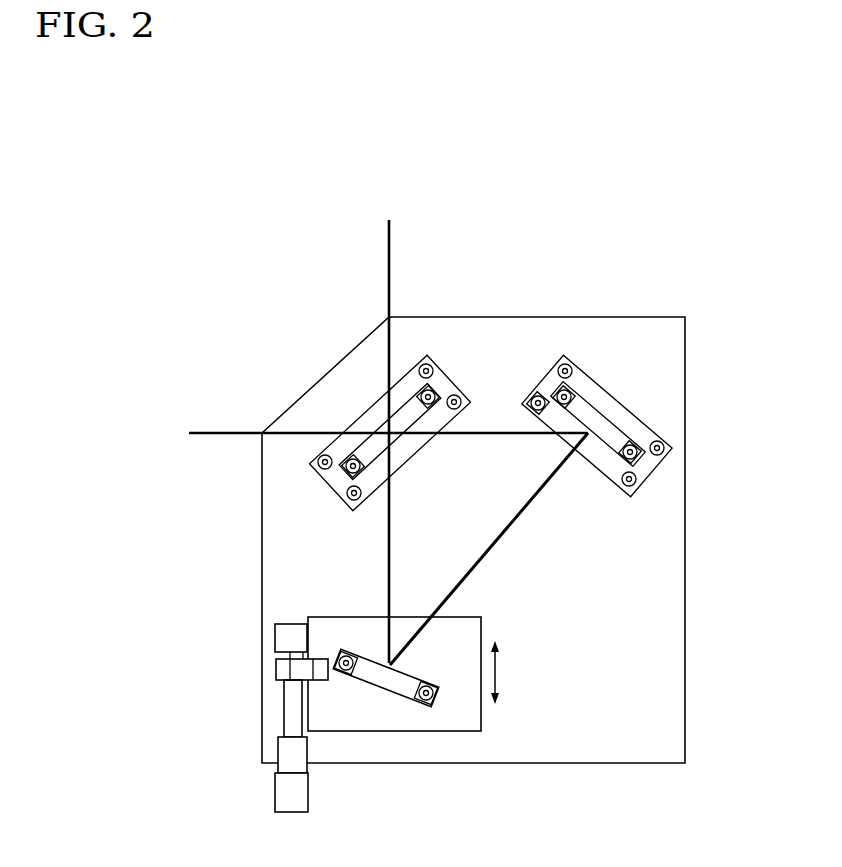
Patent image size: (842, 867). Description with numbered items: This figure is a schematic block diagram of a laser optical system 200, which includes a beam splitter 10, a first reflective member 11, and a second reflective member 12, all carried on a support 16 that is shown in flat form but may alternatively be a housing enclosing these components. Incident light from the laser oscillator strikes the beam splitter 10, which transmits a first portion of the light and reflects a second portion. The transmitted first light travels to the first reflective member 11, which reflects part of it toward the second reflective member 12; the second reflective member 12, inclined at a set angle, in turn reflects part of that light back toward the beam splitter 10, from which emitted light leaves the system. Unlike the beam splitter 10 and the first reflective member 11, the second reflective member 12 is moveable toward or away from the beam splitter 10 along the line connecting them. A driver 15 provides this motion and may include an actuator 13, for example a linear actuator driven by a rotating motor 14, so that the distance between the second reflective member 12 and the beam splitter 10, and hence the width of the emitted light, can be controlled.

The laser optical system 200 is at (658, 264).
The beam splitter 10 is at (385, 425).
The first reflective member 11 is at (607, 417).
The second reflective member 12 is at (380, 689).
The actuator 13 is at (290, 707).
The rotating motor 14 is at (280, 635).
The driver 15 is at (202, 632).
The support 16 is at (675, 572).